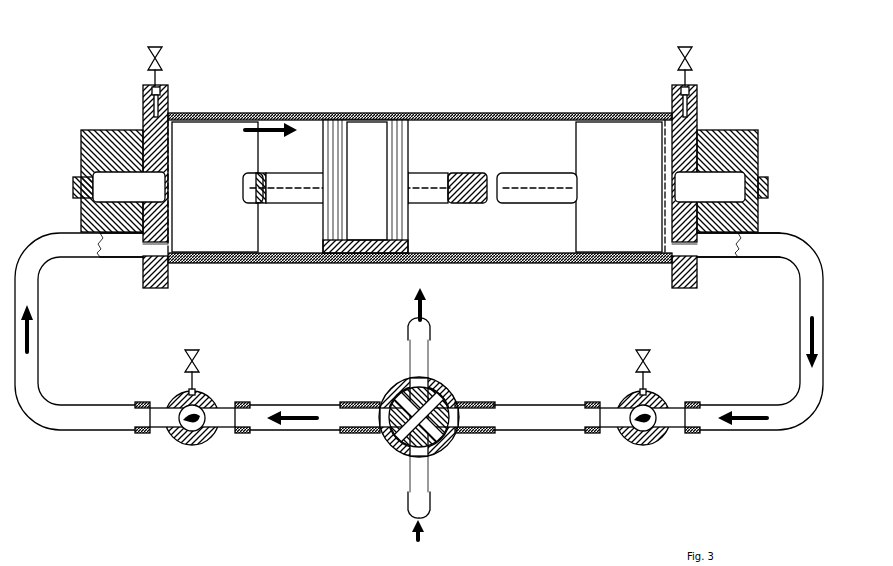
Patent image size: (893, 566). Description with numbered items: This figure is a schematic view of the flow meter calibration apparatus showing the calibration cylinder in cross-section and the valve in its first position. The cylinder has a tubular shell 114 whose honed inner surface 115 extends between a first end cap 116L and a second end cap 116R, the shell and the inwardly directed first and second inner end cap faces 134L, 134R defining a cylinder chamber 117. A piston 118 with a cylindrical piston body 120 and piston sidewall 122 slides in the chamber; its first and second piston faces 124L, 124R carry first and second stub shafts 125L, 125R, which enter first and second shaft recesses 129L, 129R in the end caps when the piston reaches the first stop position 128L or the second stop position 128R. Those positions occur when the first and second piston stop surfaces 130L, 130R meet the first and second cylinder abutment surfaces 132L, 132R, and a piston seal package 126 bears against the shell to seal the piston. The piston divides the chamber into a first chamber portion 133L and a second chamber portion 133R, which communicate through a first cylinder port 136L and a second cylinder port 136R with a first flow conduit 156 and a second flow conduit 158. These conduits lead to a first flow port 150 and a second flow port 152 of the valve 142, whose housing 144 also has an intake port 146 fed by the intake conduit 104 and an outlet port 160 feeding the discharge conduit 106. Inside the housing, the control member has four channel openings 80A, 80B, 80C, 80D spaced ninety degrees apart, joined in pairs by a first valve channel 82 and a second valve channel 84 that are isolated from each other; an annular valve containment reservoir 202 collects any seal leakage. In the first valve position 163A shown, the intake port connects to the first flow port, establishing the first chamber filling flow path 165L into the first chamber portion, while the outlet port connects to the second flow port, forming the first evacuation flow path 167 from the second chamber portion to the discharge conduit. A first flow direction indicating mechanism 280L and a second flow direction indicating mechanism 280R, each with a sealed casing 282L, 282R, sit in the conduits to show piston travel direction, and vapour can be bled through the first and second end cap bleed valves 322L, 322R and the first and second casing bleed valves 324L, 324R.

The intake conduit 104 is at (419, 505).
The discharge conduit 106 is at (419, 330).
The tubular shell 114 is at (275, 114).
The inner surface 115 is at (430, 120).
The first end cap 116L is at (145, 98).
The second end cap 116R is at (698, 103).
The cylinder chamber 117 is at (531, 237).
The piston 118 is at (358, 133).
The piston body 120 is at (360, 232).
The piston sidewall 122 is at (382, 116).
The first piston face 124L is at (325, 232).
The second piston face 124R is at (409, 230).
The first stub shaft 125L is at (308, 170).
The second stub shaft 125R is at (422, 200).
The piston seal package 126 is at (325, 117).
The first stop position 128L is at (227, 155).
The second stop position 128R is at (638, 155).
The first shaft recess 129L is at (113, 187).
The second shaft recess 129R is at (702, 190).
The first piston stop surface 130L is at (280, 292).
The second piston stop surface 130R is at (469, 294).
The first cylinder abutment surface 132L is at (168, 236).
The second cylinder abutment surface 132R is at (672, 220).
The first chamber portion 133L is at (257, 227).
The second chamber portion 133R is at (535, 150).
The first inner end cap face 134L is at (244, 317).
The second inner end cap face 134R is at (613, 311).
The first cylinder port 136L is at (157, 245).
The second cylinder port 136R is at (690, 244).
The valve 142 is at (452, 414).
The housing 144 is at (385, 447).
The intake port 146 is at (420, 457).
The first flow port 150 is at (386, 410).
The second flow port 152 is at (452, 418).
The first flow conduit 156 is at (58, 432).
The second flow conduit 158 is at (750, 430).
The outlet port 160 is at (424, 400).
The first valve position 163A is at (481, 384).
The first chamber filling flow path 165L is at (29, 320).
The first evacuation flow path 167 is at (818, 338).
The valve containment reservoir 202 is at (453, 437).
The first flow direction indicating mechanism 280L is at (200, 447).
The second flow direction indicating mechanism 280R is at (657, 442).
The casing 282L is at (221, 450).
The casing 282R is at (674, 450).
The first end cap bleed valve 322L is at (151, 52).
The second end cap bleed valve 322R is at (690, 58).
The first casing bleed valve 324L is at (200, 365).
The second casing bleed valve 324R is at (648, 362).
The channel opening 80A is at (436, 444).
The channel opening 80B is at (388, 394).
The channel opening 80C is at (446, 393).
The channel opening 80D is at (430, 381).
The first valve channel 82 is at (410, 428).
The second valve channel 84 is at (433, 415).